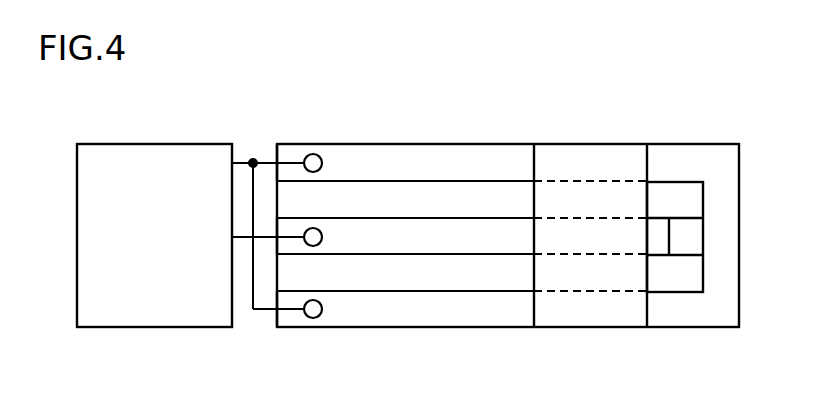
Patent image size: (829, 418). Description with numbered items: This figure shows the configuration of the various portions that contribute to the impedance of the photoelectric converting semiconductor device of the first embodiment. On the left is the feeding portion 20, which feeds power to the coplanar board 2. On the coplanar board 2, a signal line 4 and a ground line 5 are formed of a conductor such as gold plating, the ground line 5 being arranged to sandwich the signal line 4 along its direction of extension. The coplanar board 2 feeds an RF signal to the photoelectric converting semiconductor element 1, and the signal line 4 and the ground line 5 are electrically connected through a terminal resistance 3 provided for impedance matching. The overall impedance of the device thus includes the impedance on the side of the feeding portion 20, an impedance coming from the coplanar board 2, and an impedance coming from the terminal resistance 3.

The feeding portion 20 is at (120, 236).
The ground line 5 is at (723, 237).
The coplanar board 2 is at (373, 144).
The signal line 4 is at (392, 235).
The photoelectric converting semiconductor element 1 is at (590, 144).
The terminal resistance 3 is at (686, 237).